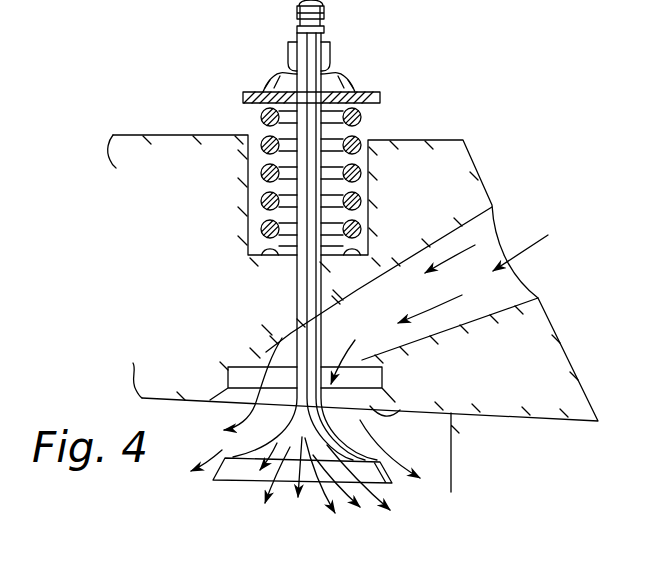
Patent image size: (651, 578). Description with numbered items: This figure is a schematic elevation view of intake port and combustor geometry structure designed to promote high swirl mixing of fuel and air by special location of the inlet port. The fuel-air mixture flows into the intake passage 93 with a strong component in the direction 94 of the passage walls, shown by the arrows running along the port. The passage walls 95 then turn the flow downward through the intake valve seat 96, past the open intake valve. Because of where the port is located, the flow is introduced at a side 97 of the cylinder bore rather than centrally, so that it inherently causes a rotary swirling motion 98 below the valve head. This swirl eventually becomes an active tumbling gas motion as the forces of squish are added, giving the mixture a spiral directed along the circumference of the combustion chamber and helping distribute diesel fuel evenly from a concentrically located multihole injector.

The intake passage 93 is at (421, 253).
The direction of the passage walls 94 is at (434, 307).
The passage walls 95 is at (271, 351).
The intake valve seat 96 is at (402, 412).
The side of the cylinder bore 97 is at (446, 458).
The rotary swirling motion 98 is at (410, 463).